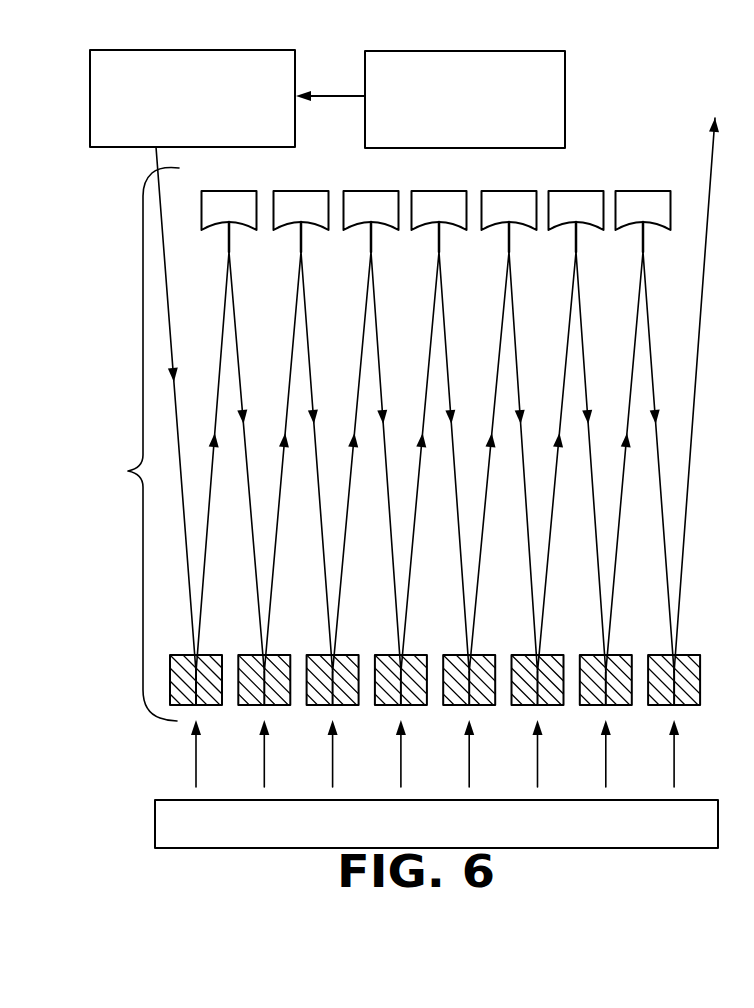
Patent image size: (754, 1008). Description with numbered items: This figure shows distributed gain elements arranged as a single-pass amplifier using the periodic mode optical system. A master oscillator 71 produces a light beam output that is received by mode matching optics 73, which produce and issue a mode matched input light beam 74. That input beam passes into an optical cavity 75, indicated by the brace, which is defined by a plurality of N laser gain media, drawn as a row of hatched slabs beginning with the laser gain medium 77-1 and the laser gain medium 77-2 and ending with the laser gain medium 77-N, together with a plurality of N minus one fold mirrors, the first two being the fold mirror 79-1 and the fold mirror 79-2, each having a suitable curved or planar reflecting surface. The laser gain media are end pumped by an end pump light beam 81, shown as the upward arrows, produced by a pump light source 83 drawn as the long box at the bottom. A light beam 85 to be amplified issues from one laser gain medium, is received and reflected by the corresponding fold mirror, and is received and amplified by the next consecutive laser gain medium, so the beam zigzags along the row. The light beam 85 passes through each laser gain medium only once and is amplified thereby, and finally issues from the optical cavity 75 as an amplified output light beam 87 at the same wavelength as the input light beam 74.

The master oscillator 71 is at (566, 84).
The mode matching optics 73 is at (296, 84).
The mode matched input light beam 74 is at (165, 270).
The optical cavity 75 is at (130, 444).
The laser gain medium 77-1 is at (171, 657).
The laser gain medium 77-2 is at (250, 656).
The laser gain medium 77-N is at (690, 657).
The fold mirror 79-1 is at (236, 178).
The fold mirror 79-2 is at (300, 191).
The end pump light beam 81 is at (264, 776).
The pump light source 83 is at (696, 800).
The light beam to be amplified 85 is at (294, 332).
The amplified output light beam 87 is at (711, 168).